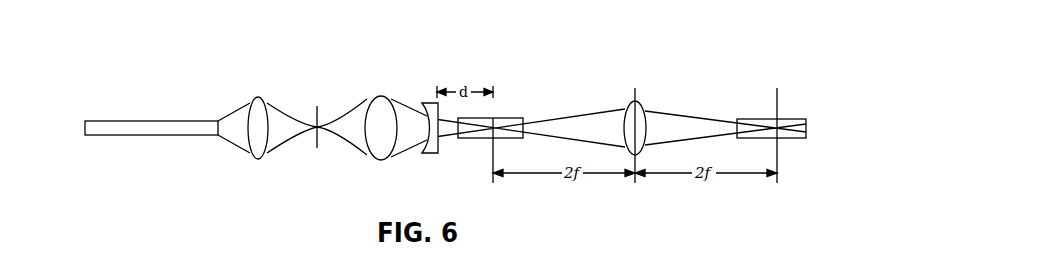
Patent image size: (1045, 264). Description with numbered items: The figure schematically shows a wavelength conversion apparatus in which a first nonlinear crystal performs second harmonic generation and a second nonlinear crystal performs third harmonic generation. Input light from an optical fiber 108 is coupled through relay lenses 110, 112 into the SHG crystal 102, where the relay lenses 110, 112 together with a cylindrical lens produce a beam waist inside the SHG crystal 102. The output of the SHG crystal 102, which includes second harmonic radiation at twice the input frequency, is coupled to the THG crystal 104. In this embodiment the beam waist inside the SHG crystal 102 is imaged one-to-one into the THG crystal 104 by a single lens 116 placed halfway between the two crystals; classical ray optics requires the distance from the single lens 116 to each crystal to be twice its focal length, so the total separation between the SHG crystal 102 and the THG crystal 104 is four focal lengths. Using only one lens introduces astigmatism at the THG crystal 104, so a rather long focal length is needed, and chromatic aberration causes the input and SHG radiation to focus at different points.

The optical fiber 108 is at (127, 121).
The relay lens 110 is at (257, 98).
The relay lens 112 is at (383, 98).
The SHG crystal 102 is at (503, 118).
The single lens 116 is at (638, 101).
The THG crystal 104 is at (748, 119).